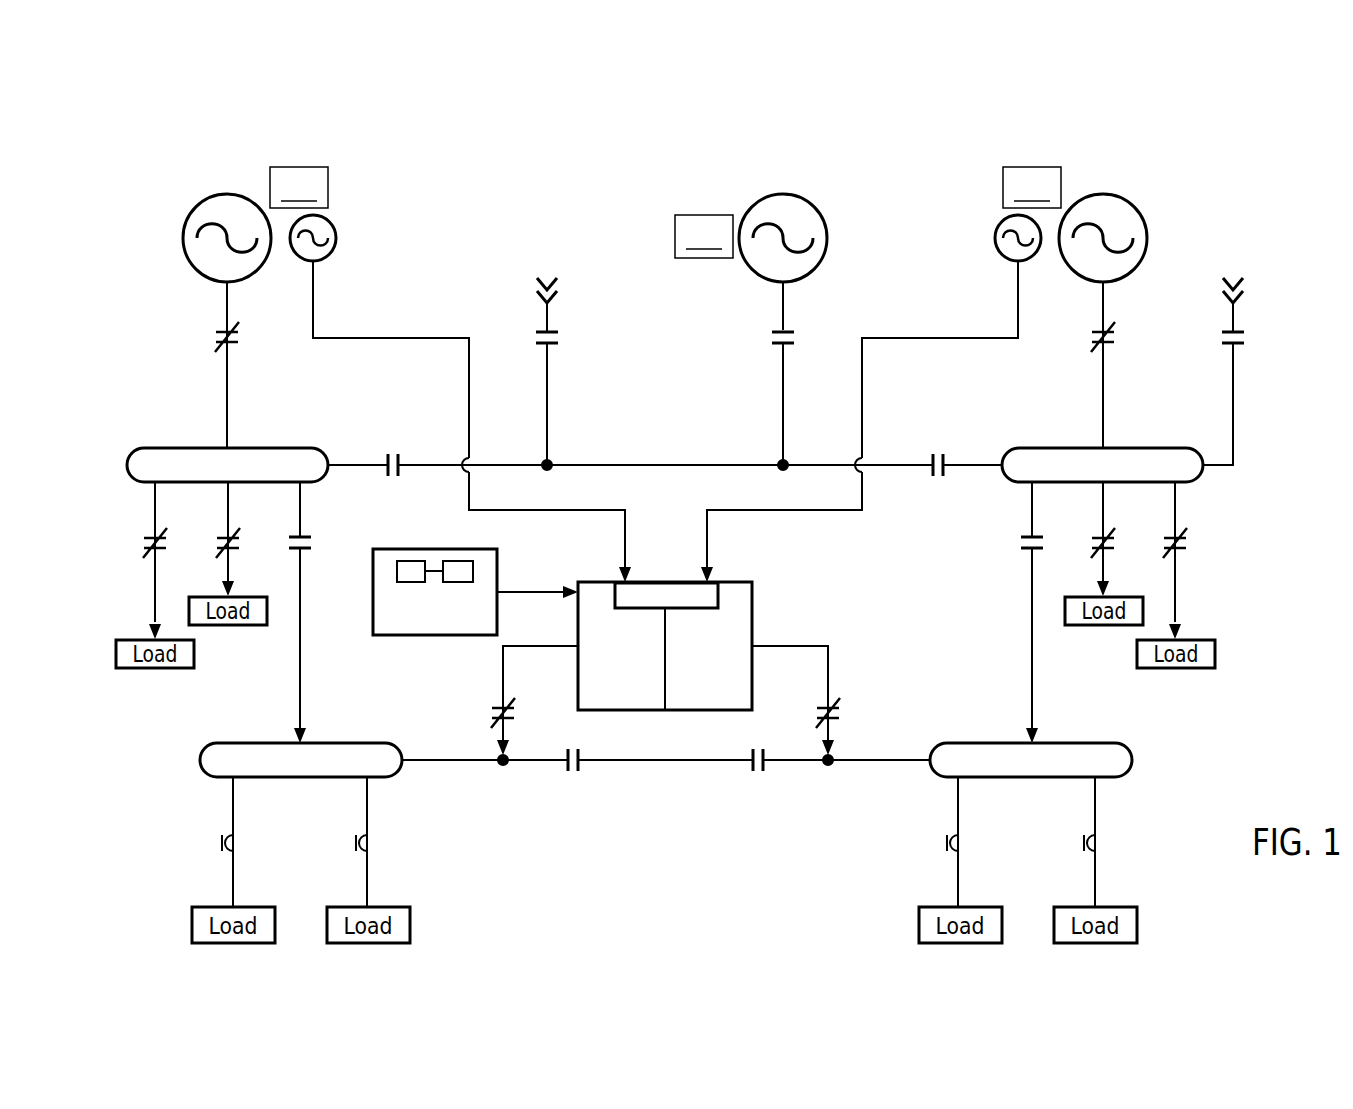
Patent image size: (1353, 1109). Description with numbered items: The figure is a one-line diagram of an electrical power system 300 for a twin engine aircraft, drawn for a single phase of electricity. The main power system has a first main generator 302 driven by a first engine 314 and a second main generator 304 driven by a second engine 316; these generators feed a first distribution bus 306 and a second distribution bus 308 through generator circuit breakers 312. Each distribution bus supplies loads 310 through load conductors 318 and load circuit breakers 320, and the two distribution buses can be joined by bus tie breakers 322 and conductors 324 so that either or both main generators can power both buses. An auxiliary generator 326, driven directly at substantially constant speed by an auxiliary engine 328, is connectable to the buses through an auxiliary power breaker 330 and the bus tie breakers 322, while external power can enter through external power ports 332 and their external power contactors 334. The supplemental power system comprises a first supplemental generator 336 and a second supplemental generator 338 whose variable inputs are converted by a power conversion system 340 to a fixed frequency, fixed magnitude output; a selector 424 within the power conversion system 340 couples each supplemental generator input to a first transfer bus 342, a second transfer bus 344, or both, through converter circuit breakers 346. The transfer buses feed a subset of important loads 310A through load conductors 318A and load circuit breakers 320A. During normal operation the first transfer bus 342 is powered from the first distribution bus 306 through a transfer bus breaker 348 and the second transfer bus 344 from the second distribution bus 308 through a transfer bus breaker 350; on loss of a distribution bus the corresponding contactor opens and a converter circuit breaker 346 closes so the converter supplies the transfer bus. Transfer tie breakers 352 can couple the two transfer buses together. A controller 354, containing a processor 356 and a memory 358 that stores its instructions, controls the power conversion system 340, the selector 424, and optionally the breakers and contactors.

The electrical power system 300 is at (243, 108).
The first main generator 302 is at (188, 226).
The second main generator 304 is at (1140, 212).
The first distribution bus 306 is at (127, 465).
The second distribution bus 308 is at (1196, 482).
The loads 310 is at (155, 670).
The loads 310A is at (233, 943).
The generator circuit breakers 312 is at (243, 340).
The first engine 314 is at (450, 374).
The second engine 316 is at (881, 374).
The load conductors 318 is at (154, 588).
The load conductors 318A is at (232, 875).
The load circuit breakers 320 is at (148, 530).
The load circuit breakers 320A is at (222, 843).
The bus tie breakers 322 is at (394, 480).
The conductors 324 is at (657, 463).
The auxiliary generator 326 is at (818, 222).
The auxiliary engine 328 is at (704, 236).
The auxiliary power breaker 330 is at (795, 327).
The external power ports 332 is at (528, 285).
The external power contactors 334 is at (540, 348).
The first supplemental generator 336 is at (326, 256).
The second supplemental generator 338 is at (1007, 258).
The power conversion system 340 is at (752, 600).
The first transfer bus 342 is at (300, 778).
The second transfer bus 344 is at (1030, 778).
The converter circuit breakers 346 is at (497, 705).
The transfer bus breaker 348 is at (305, 555).
The transfer bus breaker 350 is at (1026, 557).
The transfer tie breakers 352 is at (565, 765).
The controller 354 is at (460, 597).
The processor 356 is at (410, 561).
The memory 358 is at (473, 571).
The selector 424 is at (666, 581).